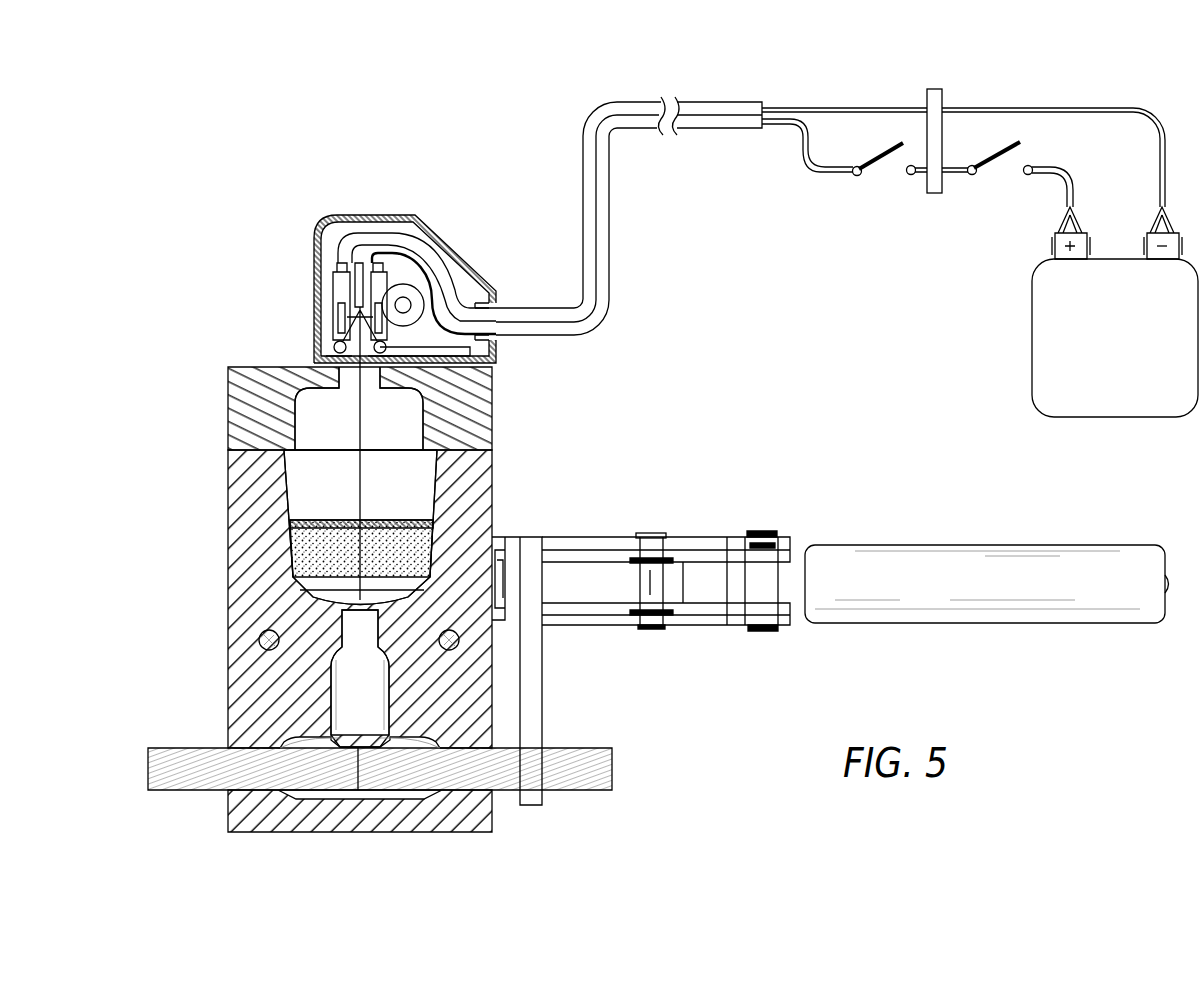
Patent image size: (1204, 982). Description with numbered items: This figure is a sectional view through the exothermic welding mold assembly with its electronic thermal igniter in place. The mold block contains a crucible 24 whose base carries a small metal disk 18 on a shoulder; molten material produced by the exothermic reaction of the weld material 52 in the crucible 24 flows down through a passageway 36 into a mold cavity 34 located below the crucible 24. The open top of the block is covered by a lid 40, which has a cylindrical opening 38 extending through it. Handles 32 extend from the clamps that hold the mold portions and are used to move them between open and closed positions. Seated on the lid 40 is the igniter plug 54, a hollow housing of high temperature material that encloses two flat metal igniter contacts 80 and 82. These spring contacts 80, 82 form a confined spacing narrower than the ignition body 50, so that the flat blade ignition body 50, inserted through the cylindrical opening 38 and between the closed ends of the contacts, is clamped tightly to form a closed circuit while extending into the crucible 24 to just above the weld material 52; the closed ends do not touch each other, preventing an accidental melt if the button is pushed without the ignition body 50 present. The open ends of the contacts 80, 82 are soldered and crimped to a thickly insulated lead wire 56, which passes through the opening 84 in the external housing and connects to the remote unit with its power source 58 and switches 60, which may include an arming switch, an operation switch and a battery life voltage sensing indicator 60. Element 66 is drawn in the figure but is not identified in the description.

The metal disk 18 is at (318, 600).
The crucible 24 is at (446, 494).
The handle 32 is at (933, 565).
The mold cavity 34 is at (390, 802).
The passageway 36 is at (345, 690).
The cylindrical opening 38 is at (348, 389).
The lid 40 is at (272, 374).
The ignition body 50 is at (363, 423).
The exothermic weld material 52 is at (300, 545).
The igniter plug 54 is at (383, 215).
The lead wire 56 is at (598, 215).
The power source 58 is at (1058, 337).
The switch 60 is at (860, 175).
The connector 66 is at (938, 100).
The igniter contact 80 is at (334, 343).
The igniter contact 82 is at (425, 318).
The opening 84 is at (496, 300).